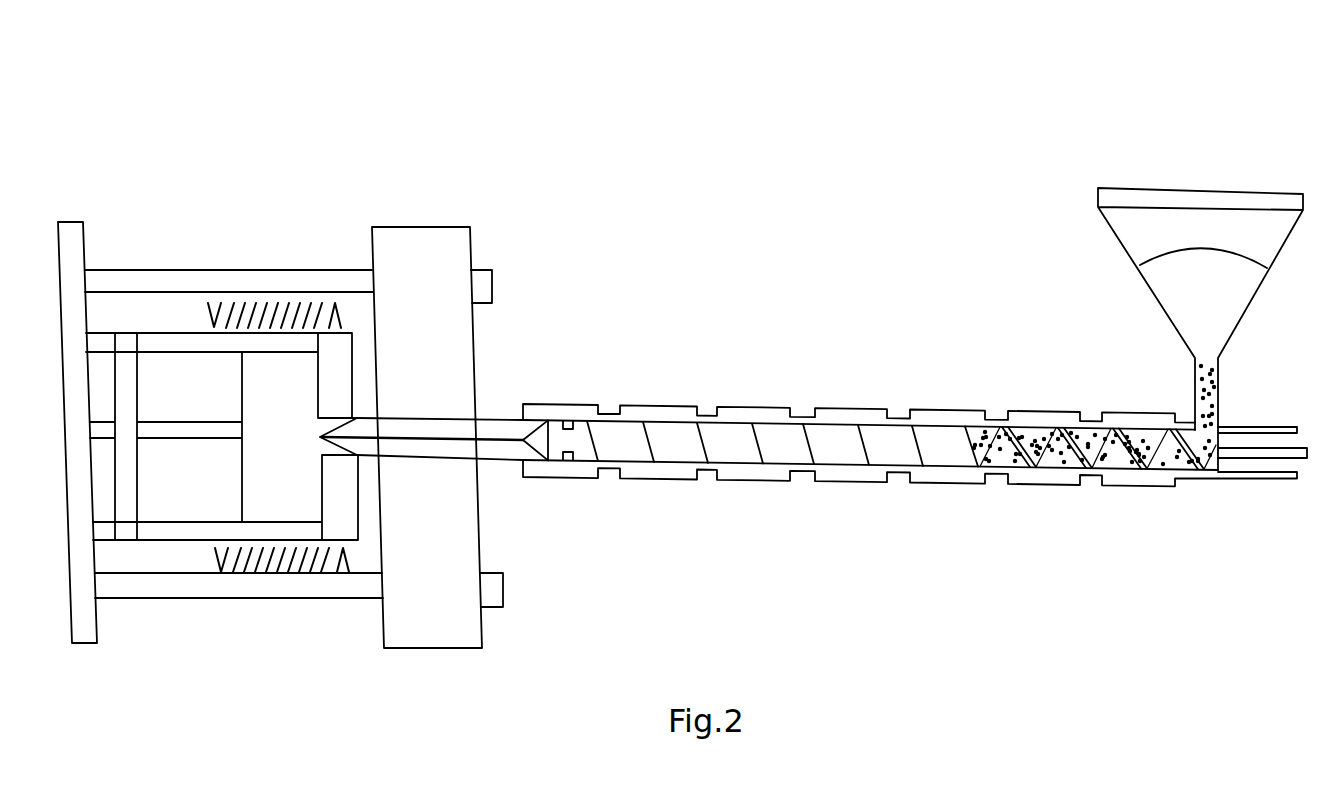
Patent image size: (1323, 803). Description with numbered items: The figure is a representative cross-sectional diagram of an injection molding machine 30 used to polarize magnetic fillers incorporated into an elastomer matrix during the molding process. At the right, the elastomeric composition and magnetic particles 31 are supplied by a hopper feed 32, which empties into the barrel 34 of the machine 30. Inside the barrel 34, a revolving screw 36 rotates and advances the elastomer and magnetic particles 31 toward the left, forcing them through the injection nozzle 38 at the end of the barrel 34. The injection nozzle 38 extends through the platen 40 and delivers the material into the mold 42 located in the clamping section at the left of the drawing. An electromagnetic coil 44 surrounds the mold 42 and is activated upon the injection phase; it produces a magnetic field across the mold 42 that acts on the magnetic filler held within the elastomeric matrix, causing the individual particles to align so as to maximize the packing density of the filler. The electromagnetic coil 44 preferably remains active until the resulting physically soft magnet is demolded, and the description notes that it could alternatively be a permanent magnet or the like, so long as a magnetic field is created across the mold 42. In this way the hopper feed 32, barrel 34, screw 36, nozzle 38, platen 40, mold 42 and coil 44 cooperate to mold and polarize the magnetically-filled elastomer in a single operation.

The injection molding machine 30 is at (984, 63).
The elastomeric composition and magnetic particles 31 is at (1198, 307).
The hopper feed 32 is at (1083, 195).
The barrel 34 is at (930, 473).
The revolving screw 36 is at (732, 445).
The injection nozzle 38 is at (384, 427).
The platen 40 is at (432, 255).
The mold 42 is at (253, 378).
The electromagnetic coil 44 is at (275, 312).